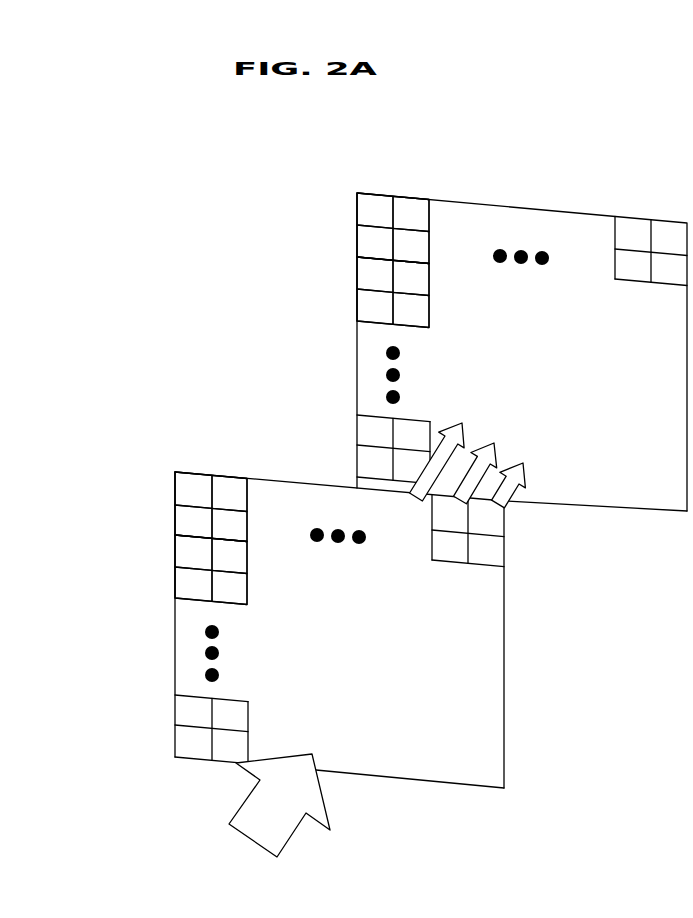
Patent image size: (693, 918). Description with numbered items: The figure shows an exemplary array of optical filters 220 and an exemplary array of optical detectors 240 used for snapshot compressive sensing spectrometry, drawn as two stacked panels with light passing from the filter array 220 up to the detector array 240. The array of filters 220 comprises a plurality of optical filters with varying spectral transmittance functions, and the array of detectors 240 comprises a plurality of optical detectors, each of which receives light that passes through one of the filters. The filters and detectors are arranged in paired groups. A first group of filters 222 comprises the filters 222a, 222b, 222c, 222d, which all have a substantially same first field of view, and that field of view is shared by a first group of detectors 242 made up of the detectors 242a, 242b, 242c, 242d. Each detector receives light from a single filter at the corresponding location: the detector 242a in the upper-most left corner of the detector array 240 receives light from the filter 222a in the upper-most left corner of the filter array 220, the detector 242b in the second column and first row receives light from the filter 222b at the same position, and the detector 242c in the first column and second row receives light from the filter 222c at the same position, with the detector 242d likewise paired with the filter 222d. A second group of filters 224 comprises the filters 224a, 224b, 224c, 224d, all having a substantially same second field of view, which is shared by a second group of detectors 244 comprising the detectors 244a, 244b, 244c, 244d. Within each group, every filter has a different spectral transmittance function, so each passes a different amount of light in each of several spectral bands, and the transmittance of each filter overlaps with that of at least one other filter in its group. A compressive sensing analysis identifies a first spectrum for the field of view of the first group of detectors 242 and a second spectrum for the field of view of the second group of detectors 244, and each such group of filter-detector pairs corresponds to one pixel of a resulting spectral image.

The array of optical filters 220 is at (253, 442).
The first group of filters 222 is at (163, 442).
The filter 222a is at (175, 490).
The filter 222b is at (247, 500).
The filter 222c is at (175, 521).
The filter 222d is at (247, 530).
The second group of filters 224 is at (146, 600).
The filter 224a is at (175, 552).
The filter 224b is at (247, 562).
The filter 224c is at (175, 584).
The filter 224d is at (247, 592).
The array of optical detectors 240 is at (435, 167).
The first group of detectors 242 is at (345, 167).
The detector 242a is at (357, 212).
The detector 242b is at (429, 240).
The detector 242c is at (357, 244).
The detector 242d is at (429, 262).
The second group of detectors 244 is at (328, 324).
The detector 244a is at (357, 276).
The detector 244b is at (429, 285).
The detector 244c is at (357, 308).
The detector 244d is at (429, 316).